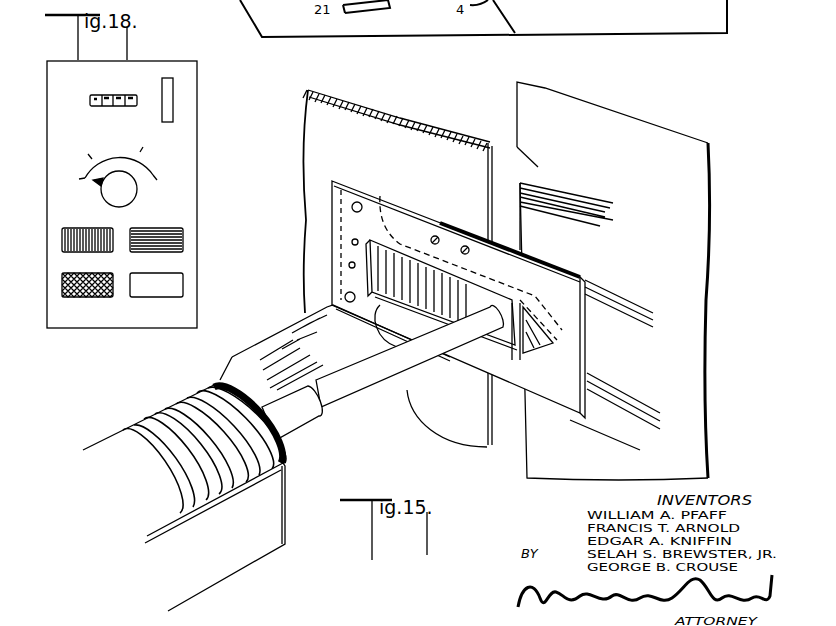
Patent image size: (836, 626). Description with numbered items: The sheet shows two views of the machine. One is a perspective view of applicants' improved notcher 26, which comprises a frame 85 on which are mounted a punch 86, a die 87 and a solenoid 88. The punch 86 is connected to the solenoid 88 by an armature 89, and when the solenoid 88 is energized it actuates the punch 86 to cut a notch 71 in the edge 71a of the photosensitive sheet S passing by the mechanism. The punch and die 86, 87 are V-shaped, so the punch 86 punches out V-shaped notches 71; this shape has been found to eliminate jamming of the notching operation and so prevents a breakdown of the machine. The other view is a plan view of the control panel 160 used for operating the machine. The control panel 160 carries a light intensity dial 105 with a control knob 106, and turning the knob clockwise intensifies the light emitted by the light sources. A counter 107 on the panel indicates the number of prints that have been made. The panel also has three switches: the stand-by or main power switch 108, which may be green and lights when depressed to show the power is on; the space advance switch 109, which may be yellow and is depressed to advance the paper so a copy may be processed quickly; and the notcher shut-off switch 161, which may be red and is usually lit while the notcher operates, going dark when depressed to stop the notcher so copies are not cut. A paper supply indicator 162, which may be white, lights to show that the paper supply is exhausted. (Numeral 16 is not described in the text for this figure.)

In FIG. 18, the counter 107 is at (123, 91).
In FIG. 18, the light intensity dial 105 is at (150, 160).
In FIG. 18, the control knob 106 is at (132, 192).
In FIG. 18, the control panel 160 is at (201, 179).
In FIG. 18, the stand-by or main power switch 108 is at (73, 228).
In FIG. 18, the space advance switch 109 is at (167, 228).
In FIG. 18, the notcher shut-off switch 161 is at (92, 297).
In FIG. 18, the paper supply indicator 162 is at (162, 297).
In FIG. 15, the photosensitive sheet S is at (668, 147).
In FIG. 15, the edge of the photosensitive sheet 71a is at (516, 126).
In FIG. 15, the notch 71 is at (532, 157).
In FIG. 15, the wall 16 is at (318, 226).
In FIG. 15, the die 87 is at (572, 402).
In FIG. 15, the punch 86 is at (530, 323).
In FIG. 15, the notcher 26 is at (264, 336).
In FIG. 15, the armature 89 is at (380, 380).
In FIG. 15, the frame 85 is at (330, 372).
In FIG. 15, the solenoid 88 is at (173, 412).